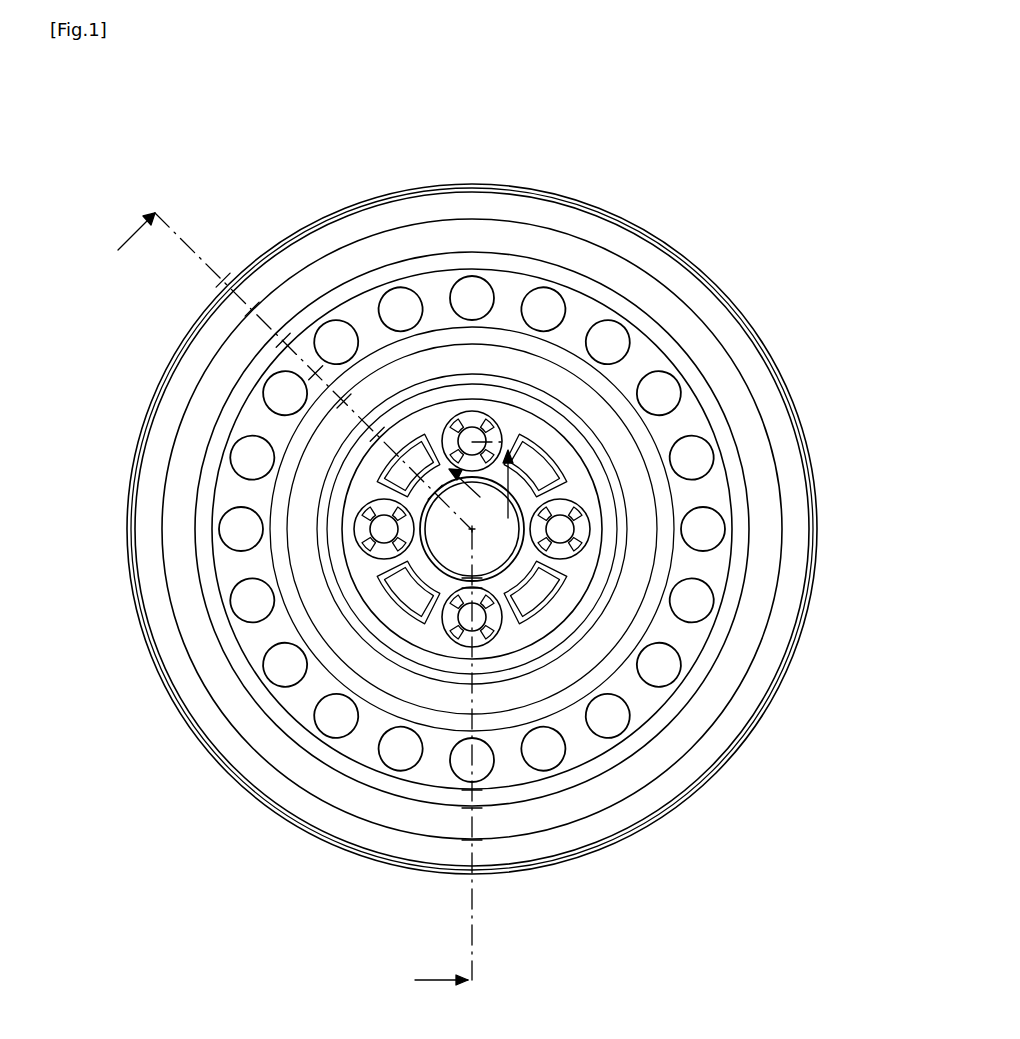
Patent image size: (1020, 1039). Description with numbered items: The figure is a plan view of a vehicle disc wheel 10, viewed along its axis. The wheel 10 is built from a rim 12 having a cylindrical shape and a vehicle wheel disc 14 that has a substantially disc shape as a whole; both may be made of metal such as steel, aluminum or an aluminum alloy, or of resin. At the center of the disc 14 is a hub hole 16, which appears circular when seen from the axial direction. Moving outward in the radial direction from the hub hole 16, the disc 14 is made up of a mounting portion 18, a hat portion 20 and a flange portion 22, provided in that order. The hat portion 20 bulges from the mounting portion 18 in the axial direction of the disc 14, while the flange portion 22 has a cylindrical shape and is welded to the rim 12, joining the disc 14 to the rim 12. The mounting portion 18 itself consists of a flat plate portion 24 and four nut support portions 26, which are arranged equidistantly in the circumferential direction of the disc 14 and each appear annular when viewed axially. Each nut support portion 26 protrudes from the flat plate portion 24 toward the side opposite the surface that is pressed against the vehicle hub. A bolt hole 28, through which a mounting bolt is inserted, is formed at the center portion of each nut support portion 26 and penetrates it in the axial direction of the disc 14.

The vehicle disc wheel 10 is at (716, 152).
The rim 12 is at (524, 181).
The vehicle wheel disc 14 is at (585, 281).
The hub hole 16 is at (453, 556).
The mounting portion 18 is at (512, 632).
The hat portion 20 is at (370, 702).
The flange portion 22 is at (258, 710).
The flat plate portion 24 is at (507, 562).
The nut support portion 26 is at (470, 412).
The bolt hole 28 is at (400, 534).